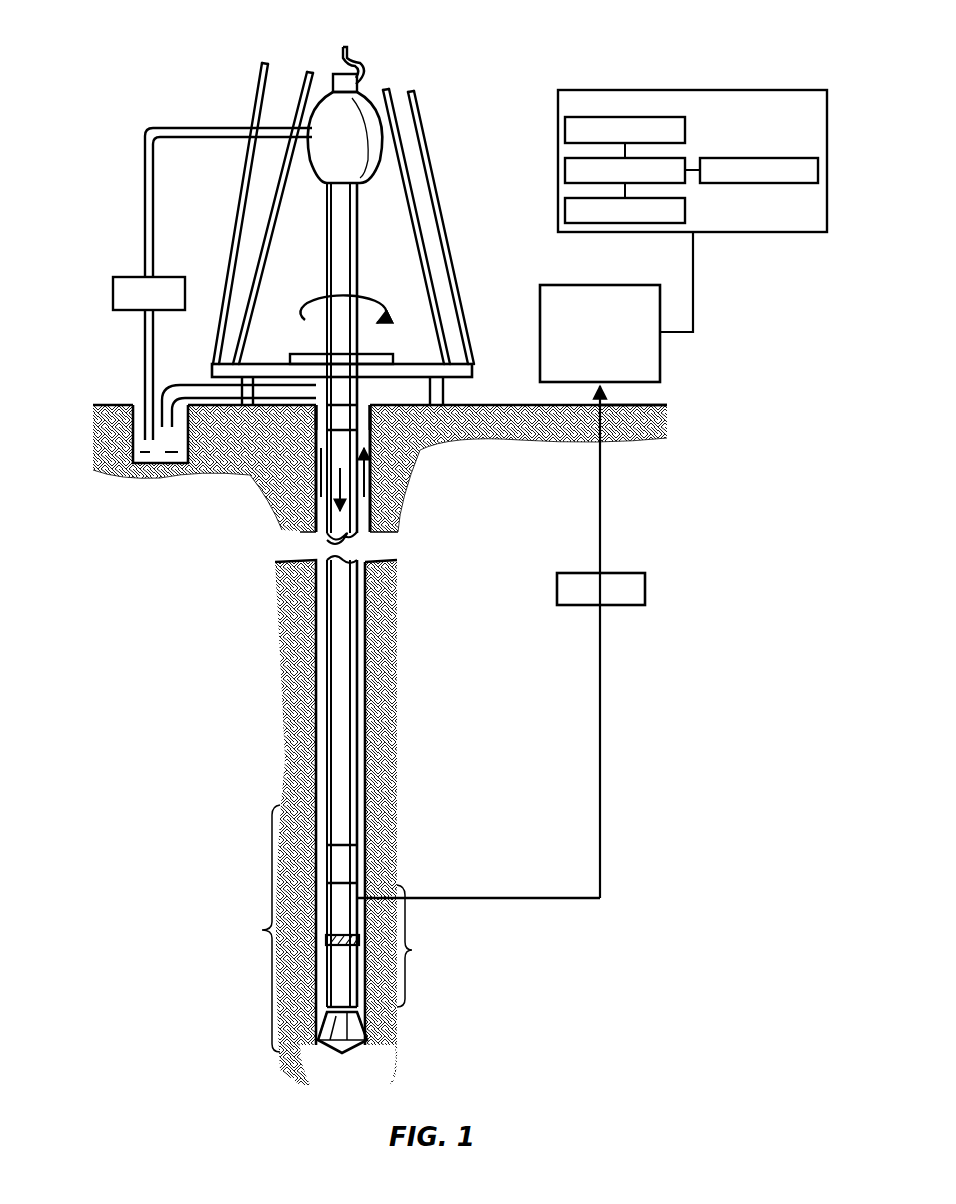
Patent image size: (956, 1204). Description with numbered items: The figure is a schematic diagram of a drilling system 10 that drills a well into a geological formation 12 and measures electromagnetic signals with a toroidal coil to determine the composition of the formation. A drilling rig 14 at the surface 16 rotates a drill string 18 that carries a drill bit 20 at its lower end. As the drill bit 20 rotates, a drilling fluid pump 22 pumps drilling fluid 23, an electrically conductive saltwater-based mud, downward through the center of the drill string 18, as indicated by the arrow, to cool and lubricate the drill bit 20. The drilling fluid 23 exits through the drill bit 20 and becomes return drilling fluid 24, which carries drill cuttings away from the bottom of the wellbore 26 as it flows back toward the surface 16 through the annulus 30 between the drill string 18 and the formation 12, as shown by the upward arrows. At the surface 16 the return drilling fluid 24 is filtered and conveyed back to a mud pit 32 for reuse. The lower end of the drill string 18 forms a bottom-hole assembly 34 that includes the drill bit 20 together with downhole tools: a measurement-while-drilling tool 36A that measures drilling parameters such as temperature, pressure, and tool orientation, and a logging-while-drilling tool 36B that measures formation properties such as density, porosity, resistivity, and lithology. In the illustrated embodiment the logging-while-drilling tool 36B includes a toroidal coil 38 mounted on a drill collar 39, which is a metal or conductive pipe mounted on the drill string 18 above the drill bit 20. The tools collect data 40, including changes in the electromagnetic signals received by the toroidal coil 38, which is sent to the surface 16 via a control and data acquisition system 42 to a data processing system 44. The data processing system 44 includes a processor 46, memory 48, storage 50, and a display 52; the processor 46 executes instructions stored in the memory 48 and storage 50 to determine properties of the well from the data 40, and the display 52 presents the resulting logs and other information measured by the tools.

The drilling system 10 is at (485, 82).
The geological formation 12 is at (508, 722).
The drilling rig 14 is at (446, 144).
The surface 16 is at (505, 401).
The drill string 18 is at (341, 399).
The drill bit 20 is at (352, 1033).
The drilling fluid pump 22 is at (113, 291).
The drilling fluid 23 is at (338, 497).
The return drilling fluid 24 is at (321, 483).
The wellbore 26 is at (317, 733).
The annulus 30 is at (366, 402).
The mud pit 32 is at (165, 464).
The bottom-hole assembly 34 is at (253, 928).
The measurement-while-drilling tool 36A is at (347, 865).
The logging-while-drilling tool 36B is at (478, 946).
The toroidal coil 38 is at (350, 936).
The drill collar 39 is at (355, 996).
The data 40 is at (630, 573).
The control and data acquisition system 42 is at (630, 285).
The data processing system 44 is at (671, 135).
The processor 46 is at (683, 158).
The memory 48 is at (565, 130).
The storage 50 is at (685, 210).
The display 52 is at (760, 158).